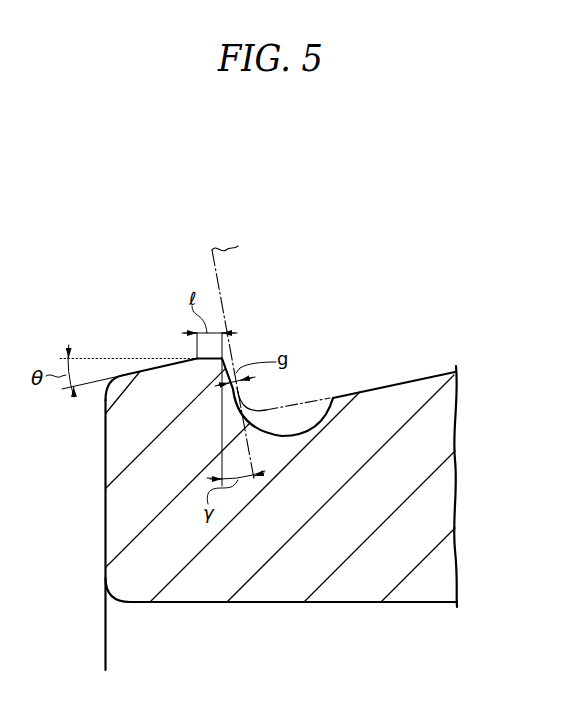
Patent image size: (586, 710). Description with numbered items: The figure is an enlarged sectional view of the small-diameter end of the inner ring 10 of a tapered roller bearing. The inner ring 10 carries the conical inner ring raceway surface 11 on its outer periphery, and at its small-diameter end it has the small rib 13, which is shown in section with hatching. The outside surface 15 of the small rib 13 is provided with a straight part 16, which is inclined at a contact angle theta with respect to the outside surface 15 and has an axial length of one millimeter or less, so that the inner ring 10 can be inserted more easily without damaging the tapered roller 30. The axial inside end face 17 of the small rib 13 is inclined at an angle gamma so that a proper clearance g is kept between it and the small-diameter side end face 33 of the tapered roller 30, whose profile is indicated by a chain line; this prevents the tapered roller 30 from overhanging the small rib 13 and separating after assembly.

The inner ring 10 is at (103, 543).
The inner ring raceway surface 11 is at (421, 379).
The small rib 13 is at (150, 400).
The outside surface 15 is at (143, 371).
The straight part 16 is at (208, 358).
The axial inside end face 17 is at (226, 404).
The tapered roller 30 is at (386, 318).
The small-diameter side end face 33 is at (216, 271).